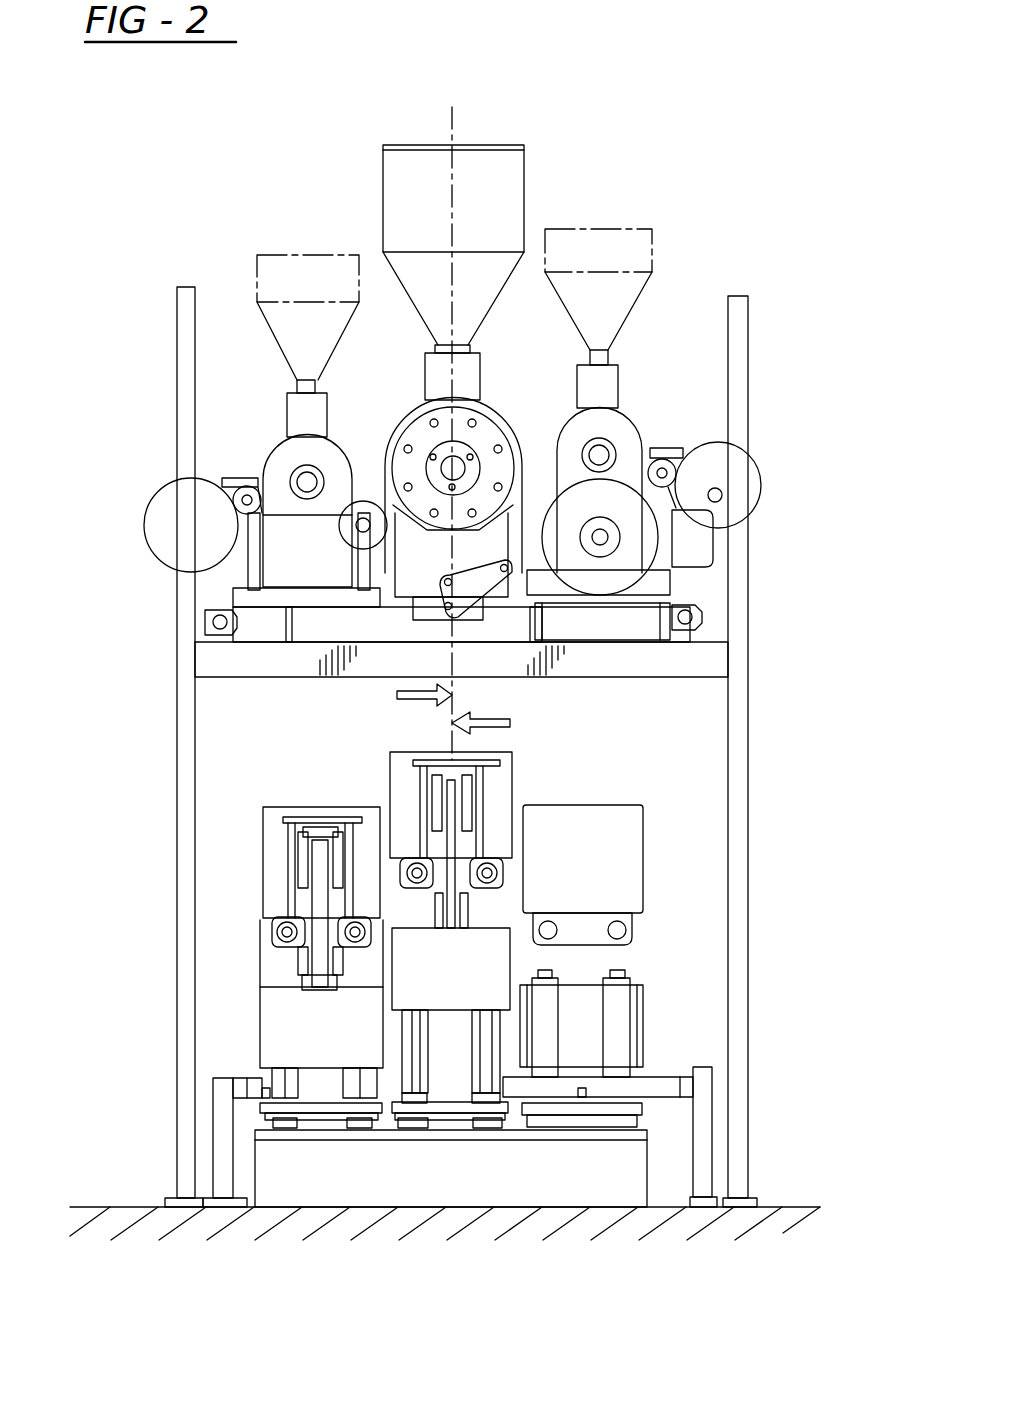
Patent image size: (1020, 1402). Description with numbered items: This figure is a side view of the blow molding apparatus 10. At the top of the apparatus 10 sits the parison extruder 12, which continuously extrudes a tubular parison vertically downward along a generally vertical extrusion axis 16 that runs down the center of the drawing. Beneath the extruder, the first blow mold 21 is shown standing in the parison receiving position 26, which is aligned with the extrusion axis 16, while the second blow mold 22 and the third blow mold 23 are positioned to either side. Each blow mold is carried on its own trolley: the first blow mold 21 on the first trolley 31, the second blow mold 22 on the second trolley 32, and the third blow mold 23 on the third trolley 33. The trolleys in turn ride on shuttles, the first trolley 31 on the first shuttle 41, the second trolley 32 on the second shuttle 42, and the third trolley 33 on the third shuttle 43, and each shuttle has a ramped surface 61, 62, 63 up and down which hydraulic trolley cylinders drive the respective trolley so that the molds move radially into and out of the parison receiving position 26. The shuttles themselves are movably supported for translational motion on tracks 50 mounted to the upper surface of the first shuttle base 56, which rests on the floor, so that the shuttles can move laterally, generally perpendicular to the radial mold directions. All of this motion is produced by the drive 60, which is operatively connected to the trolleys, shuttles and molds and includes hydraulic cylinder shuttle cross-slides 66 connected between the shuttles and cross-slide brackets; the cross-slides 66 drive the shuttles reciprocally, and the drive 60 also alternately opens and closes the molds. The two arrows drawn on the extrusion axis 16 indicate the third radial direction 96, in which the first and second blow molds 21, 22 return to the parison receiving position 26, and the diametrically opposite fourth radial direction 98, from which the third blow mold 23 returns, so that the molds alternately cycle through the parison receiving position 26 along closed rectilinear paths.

The apparatus 10 is at (235, 185).
The parison extruder 12 is at (465, 435).
The extrusion axis 16 is at (452, 128).
The fourth radial direction 98 is at (397, 695).
The third radial direction 96 is at (510, 723).
The first blow mold 21 is at (379, 838).
The parison receiving position 26 is at (418, 787).
The second blow mold 22 is at (620, 818).
The third blow mold 23 is at (282, 862).
The first trolley 31 is at (485, 950).
The second trolley 32 is at (595, 1010).
The third trolley 33 is at (278, 1010).
The ramped surface 63 is at (223, 1053).
The third shuttle 43 is at (312, 1083).
The second shuttle 42 is at (676, 1070).
The ramped surface 62 is at (568, 1058).
The ramped surface 61 is at (465, 1154).
The first shuttle 41 is at (457, 1090).
The drive 60 is at (206, 1112).
The hydraulic cylinder shuttle cross-slide 66 is at (258, 1092).
The tracks 50 is at (408, 1128).
The first shuttle base 56 is at (527, 1190).